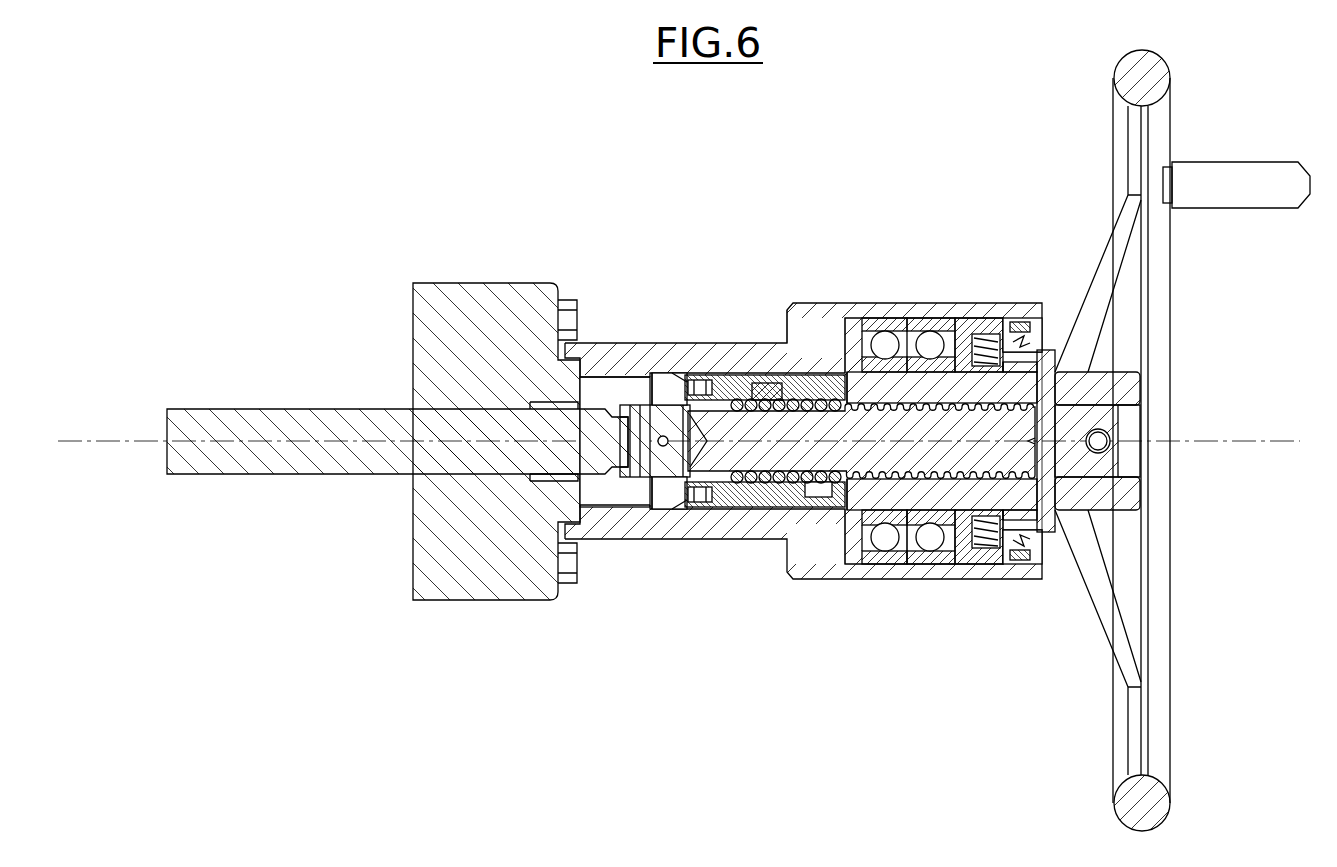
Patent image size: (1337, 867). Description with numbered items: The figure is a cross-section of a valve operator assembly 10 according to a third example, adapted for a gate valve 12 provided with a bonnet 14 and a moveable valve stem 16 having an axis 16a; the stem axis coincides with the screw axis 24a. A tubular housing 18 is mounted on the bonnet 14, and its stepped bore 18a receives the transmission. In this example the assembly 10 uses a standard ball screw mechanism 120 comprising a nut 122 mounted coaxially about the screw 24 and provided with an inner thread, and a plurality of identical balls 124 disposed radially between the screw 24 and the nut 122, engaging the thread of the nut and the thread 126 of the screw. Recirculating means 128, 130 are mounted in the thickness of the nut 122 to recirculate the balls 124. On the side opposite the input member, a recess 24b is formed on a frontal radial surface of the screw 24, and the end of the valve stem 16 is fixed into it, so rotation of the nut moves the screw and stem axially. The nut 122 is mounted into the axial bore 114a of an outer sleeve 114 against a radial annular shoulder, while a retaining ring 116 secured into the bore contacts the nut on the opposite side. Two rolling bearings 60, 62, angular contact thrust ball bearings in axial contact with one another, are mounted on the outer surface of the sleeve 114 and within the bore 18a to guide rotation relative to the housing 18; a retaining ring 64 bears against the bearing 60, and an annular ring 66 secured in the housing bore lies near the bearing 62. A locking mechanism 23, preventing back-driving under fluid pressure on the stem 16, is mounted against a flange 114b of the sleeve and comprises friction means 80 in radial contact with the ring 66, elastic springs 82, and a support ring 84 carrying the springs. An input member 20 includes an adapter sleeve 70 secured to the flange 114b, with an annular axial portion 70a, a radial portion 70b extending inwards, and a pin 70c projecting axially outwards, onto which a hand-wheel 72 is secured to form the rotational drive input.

The valve operator assembly 10 is at (800, 278).
The gate valve 12 is at (506, 260).
The bonnet 14 is at (468, 283).
The valve stem 16 is at (232, 410).
The axis 16a is at (87, 442).
The tubular housing 18 is at (822, 300).
The bore 18a is at (681, 372).
The input member 20 is at (1182, 440).
The locking mechanism 23 is at (1010, 566).
The screw 24 is at (861, 424).
The axis of screw shaft 24a is at (89, 442).
The recess 24b is at (672, 462).
The rolling bearing 60 is at (883, 318).
The rolling bearing 62 is at (927, 318).
The retaining ring 64 is at (846, 330).
The annular ring 66 is at (978, 324).
The adapter sleeve 70 is at (1142, 501).
The annular axial portion 70a is at (1021, 328).
The radial portion 70b is at (1062, 535).
The pin 70c is at (1105, 424).
The hand-wheel 72 is at (1167, 738).
The friction means 80 is at (952, 566).
The elastic springs 82 is at (922, 566).
The support ring 84 is at (980, 566).
The outer sleeve 114 is at (927, 519).
The axial bore 114a is at (862, 512).
The flange 114b is at (1022, 550).
The retaining ring 116 is at (702, 510).
The ball screw mechanism 120 is at (765, 462).
The nut 122 is at (757, 502).
The balls 124 is at (732, 388).
The thread 126 is at (890, 406).
The recirculating means 128 is at (770, 395).
The recirculating means 130 is at (812, 500).